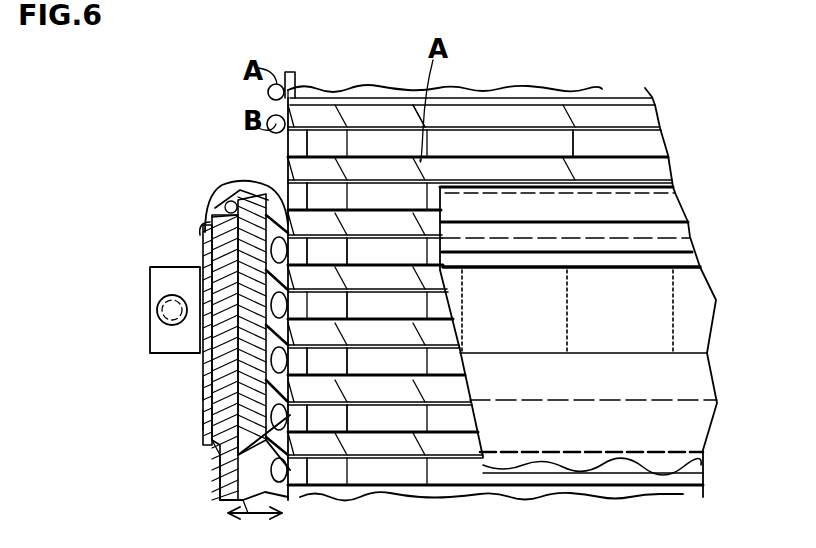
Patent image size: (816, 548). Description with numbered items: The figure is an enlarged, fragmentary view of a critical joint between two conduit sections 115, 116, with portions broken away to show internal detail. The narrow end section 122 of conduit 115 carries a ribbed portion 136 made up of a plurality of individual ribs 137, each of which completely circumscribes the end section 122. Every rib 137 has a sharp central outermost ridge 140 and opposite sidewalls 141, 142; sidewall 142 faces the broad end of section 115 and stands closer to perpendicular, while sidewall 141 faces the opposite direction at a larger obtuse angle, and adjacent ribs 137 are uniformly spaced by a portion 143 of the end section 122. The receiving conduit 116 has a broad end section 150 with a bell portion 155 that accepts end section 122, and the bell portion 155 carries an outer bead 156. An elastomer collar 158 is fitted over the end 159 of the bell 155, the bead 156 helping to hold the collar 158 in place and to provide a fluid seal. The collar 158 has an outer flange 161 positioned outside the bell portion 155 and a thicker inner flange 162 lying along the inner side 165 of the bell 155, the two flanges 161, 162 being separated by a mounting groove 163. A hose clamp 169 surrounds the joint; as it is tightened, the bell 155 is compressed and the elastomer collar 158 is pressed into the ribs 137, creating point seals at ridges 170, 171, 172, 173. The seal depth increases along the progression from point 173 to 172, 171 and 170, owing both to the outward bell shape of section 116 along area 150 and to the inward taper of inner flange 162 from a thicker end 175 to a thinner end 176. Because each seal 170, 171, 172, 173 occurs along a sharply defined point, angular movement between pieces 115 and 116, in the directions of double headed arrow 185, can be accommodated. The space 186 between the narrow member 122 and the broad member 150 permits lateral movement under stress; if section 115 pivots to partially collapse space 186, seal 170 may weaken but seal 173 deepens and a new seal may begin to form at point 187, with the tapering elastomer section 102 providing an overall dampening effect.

The tapering elastomer section 102 is at (210, 388).
The conduit section 115 is at (332, 90).
The conduit section 116 is at (220, 470).
The end section 122 is at (660, 120).
The ribbed portion 136 is at (692, 183).
The ribs 137 is at (272, 98).
The central outermost ridge 140 is at (455, 103).
The sidewall 141 is at (326, 197).
The sidewall 142 is at (325, 152).
The spacing portion 143 is at (585, 148).
The end section 150 is at (214, 416).
The bell portion 155 is at (203, 230).
The outer bead 156 is at (203, 250).
The elastomer collar 158 is at (230, 188).
The end of bell 159 is at (222, 207).
The outer flange 161 is at (205, 386).
The inner flange 162 is at (296, 468).
The mounting groove 163 is at (262, 213).
The inner side of bell 165 is at (335, 306).
The hose clamp 169 is at (150, 338).
The seal point 170 is at (296, 250).
The seal point 171 is at (290, 290).
The seal point 172 is at (296, 360).
The seal point 173 is at (290, 397).
The thicker end 175 is at (262, 192).
The thinner end 176 is at (290, 460).
The double headed arrow 185 is at (222, 497).
The space 186 is at (296, 415).
The new seal point 187 is at (166, 450).